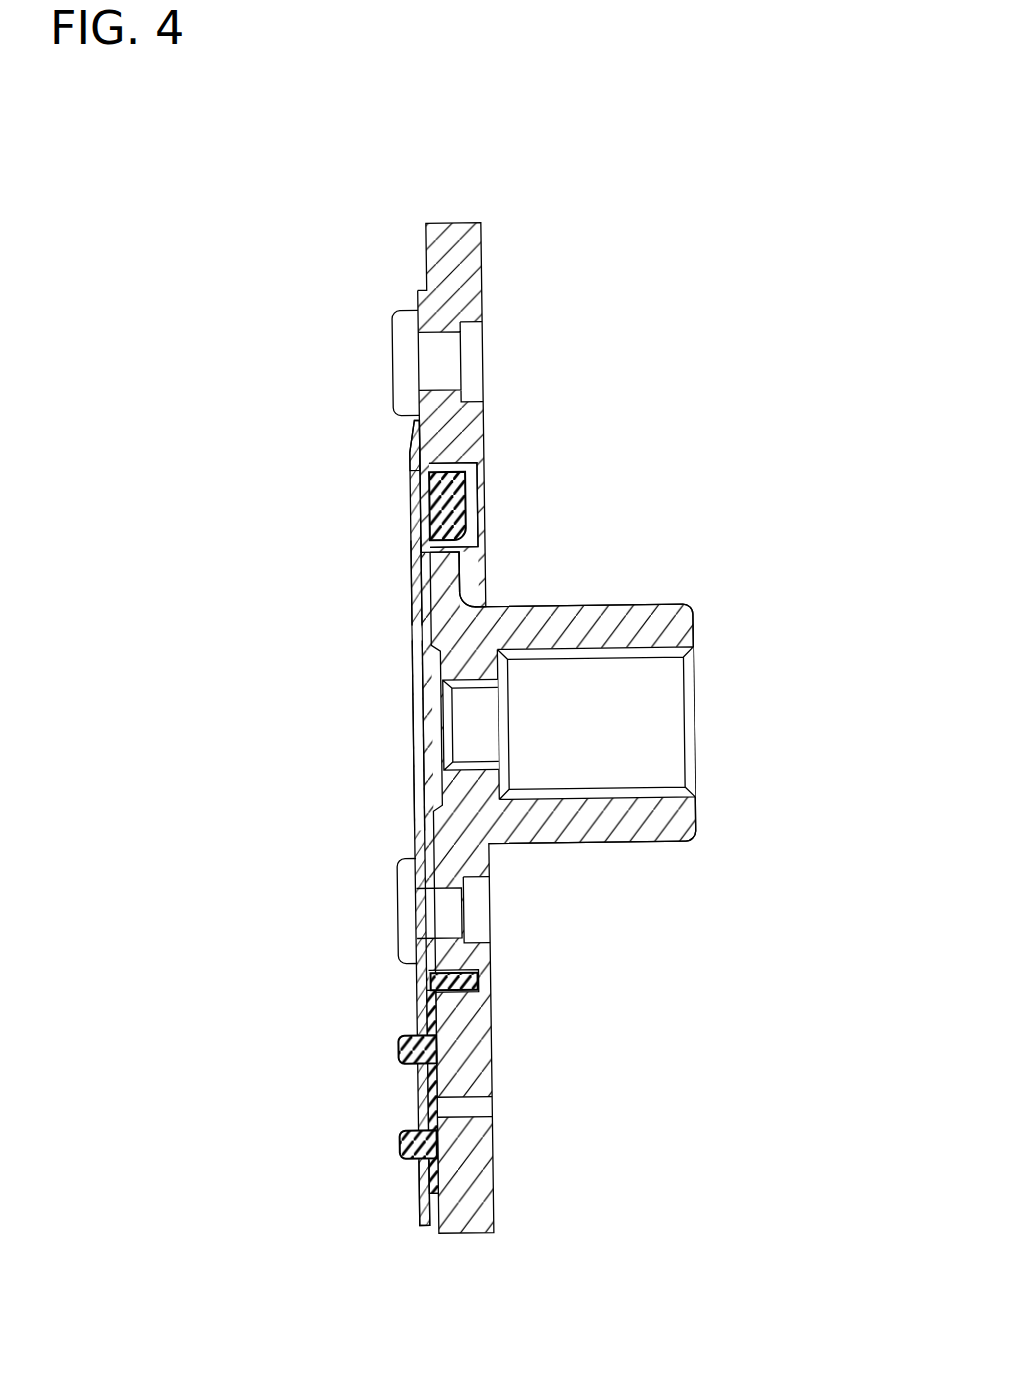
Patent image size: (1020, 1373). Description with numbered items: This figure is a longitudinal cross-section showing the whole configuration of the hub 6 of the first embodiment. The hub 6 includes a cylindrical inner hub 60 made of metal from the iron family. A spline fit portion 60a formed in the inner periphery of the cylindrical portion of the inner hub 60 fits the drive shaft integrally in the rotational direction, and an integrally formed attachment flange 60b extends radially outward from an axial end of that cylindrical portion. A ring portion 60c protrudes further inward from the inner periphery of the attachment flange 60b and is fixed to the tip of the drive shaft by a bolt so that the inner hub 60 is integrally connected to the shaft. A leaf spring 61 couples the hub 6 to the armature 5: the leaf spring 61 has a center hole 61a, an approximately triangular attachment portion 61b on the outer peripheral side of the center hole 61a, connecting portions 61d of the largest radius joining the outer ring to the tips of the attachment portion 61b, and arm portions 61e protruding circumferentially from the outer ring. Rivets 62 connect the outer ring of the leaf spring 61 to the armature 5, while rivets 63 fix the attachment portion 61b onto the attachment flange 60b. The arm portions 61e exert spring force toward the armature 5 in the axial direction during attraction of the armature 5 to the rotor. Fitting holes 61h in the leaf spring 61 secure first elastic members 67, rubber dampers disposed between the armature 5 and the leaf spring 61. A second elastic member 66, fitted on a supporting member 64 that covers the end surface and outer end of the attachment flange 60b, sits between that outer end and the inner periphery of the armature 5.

The armature 5 is at (487, 231).
The hub 6 is at (647, 593).
The inner hub 60 is at (670, 616).
The spline fit portion 60a is at (639, 663).
The attachment flange 60b is at (444, 590).
The ring portion 60c is at (463, 687).
The leaf spring 61 is at (398, 1214).
The center hole 61a is at (414, 620).
The attachment portion 61b is at (412, 563).
The connecting portions 61d is at (420, 1103).
The arm portions 61e is at (414, 445).
The fitting holes 61h is at (432, 1066).
The rivets 62 is at (408, 353).
The rivets 63 is at (404, 898).
The supporting member 64 is at (485, 498).
The second elastic member 66 is at (488, 462).
The first elastic members 67 is at (433, 1047).